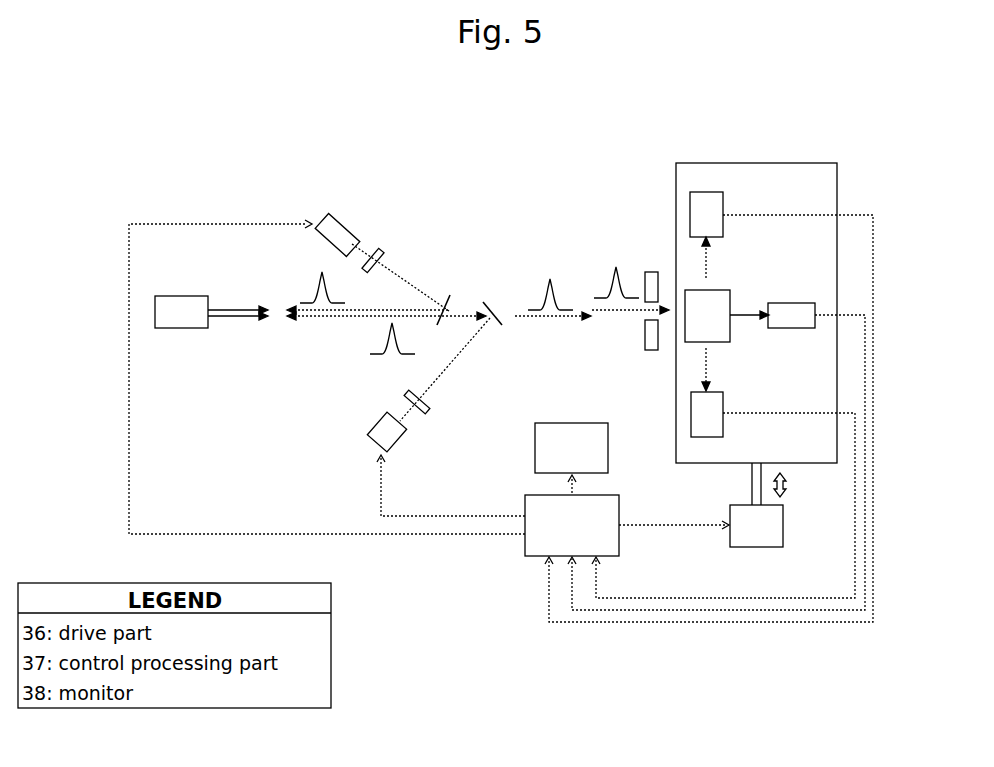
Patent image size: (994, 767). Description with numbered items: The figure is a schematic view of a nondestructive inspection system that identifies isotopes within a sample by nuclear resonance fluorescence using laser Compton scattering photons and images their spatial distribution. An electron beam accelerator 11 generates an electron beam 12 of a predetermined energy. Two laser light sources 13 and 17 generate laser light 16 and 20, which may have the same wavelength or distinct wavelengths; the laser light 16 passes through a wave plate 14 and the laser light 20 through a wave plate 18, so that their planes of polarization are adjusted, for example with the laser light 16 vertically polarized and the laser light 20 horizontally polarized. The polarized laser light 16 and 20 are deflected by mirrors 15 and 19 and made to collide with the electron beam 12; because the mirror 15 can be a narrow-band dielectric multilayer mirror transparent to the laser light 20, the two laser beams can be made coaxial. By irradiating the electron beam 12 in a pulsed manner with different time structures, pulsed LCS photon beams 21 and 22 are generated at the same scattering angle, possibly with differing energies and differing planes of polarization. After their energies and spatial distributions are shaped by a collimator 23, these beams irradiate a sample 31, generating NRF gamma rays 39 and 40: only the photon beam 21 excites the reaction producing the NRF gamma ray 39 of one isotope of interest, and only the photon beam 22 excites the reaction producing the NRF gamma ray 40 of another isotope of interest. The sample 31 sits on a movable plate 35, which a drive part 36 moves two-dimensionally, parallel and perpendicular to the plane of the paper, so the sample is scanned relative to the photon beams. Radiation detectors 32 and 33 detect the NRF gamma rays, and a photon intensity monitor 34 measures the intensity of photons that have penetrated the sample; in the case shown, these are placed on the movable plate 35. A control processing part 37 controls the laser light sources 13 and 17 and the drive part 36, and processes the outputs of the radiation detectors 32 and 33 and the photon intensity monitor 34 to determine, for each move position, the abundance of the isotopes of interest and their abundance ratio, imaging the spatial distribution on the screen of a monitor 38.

The electron beam accelerator 11 is at (178, 298).
The electron beam 12 is at (247, 318).
The laser light source 13 is at (346, 230).
The wave plate 14 is at (382, 252).
The mirror 15 is at (454, 295).
The laser light 16 is at (410, 282).
The laser light source 17 is at (376, 426).
The wave plate 18 is at (428, 408).
The mirror 19 is at (493, 330).
The laser light 20 is at (452, 366).
The pulsed LCS photon beam 21 is at (622, 276).
The pulsed LCS photon beam 22 is at (559, 286).
The collimator 23 is at (643, 338).
The sample 31 is at (728, 300).
The radiation detector 32 is at (725, 207).
The radiation detector 33 is at (725, 407).
The photon intensity monitor 34 is at (792, 302).
The movable plate 35 is at (788, 163).
The drive part 36 is at (785, 523).
The control processing part 37 is at (602, 495).
The monitor 38 is at (570, 422).
The NRF gamma ray 39 is at (707, 262).
The NRF gamma ray 40 is at (706, 370).